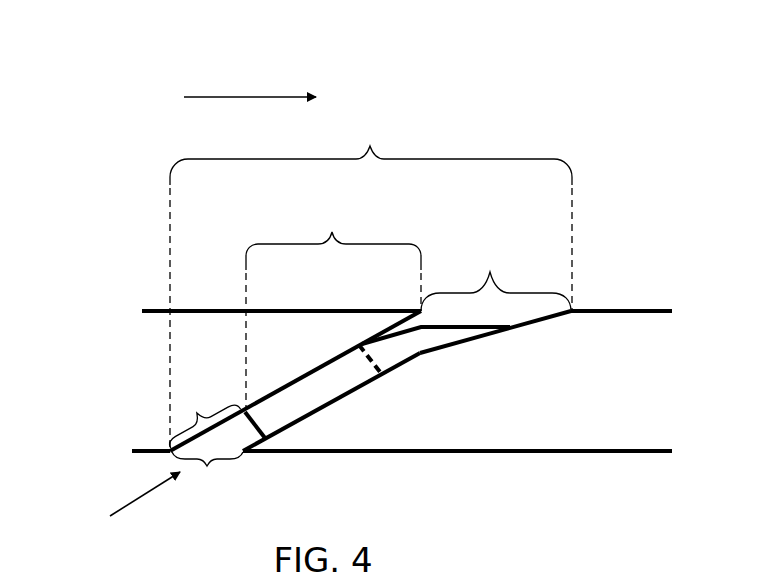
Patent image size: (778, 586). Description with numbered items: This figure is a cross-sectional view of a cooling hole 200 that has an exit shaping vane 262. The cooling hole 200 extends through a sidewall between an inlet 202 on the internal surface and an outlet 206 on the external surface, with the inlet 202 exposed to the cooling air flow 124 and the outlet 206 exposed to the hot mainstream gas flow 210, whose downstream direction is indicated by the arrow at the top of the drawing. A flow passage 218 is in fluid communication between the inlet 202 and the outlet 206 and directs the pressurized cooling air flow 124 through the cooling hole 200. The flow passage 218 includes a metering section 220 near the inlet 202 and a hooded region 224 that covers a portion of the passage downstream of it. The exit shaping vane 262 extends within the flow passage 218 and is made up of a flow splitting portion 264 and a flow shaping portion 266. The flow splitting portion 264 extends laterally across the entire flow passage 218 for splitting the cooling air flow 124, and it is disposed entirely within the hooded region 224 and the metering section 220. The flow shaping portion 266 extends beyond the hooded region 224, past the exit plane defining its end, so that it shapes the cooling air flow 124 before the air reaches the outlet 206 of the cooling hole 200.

The cooling hole 200 is at (143, 73).
The hot mainstream gas flow 210 is at (242, 96).
The flow passage 218 is at (370, 146).
The hooded region 224 is at (332, 232).
The outlet 206 is at (490, 272).
The exit shaping vane 262 is at (389, 348).
The flow splitting portion 264 is at (340, 397).
The flow shaping portion 266 is at (404, 350).
The metering section 220 is at (197, 413).
The inlet 202 is at (207, 466).
The cooling air flow 124 is at (133, 500).